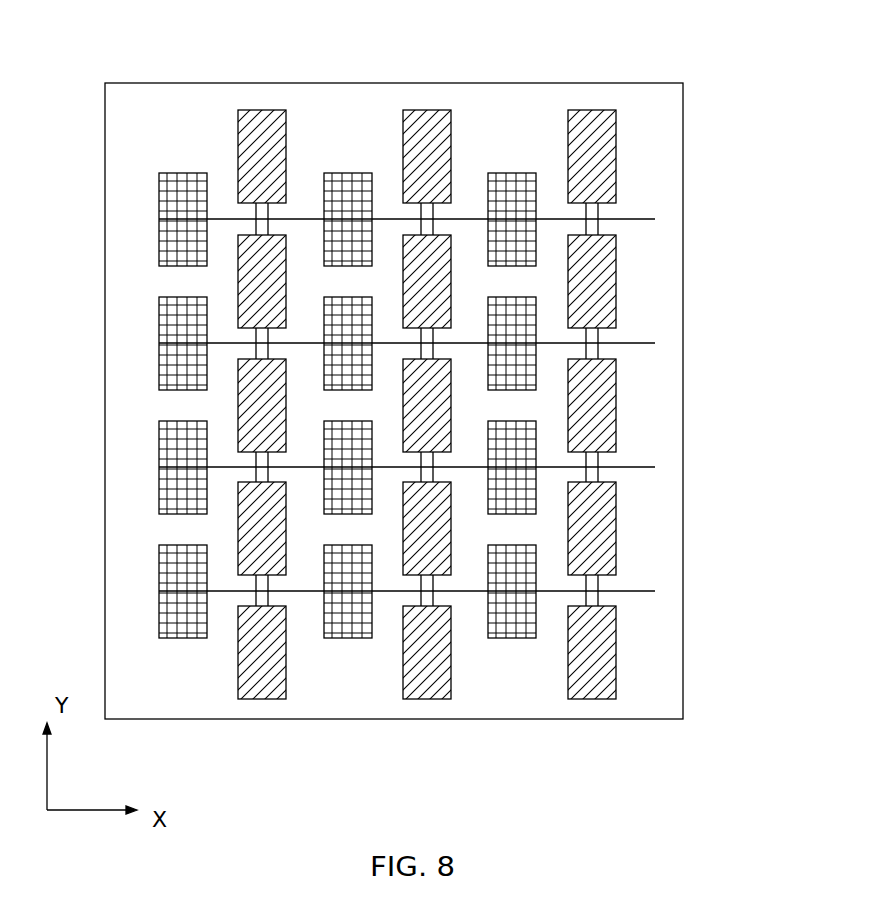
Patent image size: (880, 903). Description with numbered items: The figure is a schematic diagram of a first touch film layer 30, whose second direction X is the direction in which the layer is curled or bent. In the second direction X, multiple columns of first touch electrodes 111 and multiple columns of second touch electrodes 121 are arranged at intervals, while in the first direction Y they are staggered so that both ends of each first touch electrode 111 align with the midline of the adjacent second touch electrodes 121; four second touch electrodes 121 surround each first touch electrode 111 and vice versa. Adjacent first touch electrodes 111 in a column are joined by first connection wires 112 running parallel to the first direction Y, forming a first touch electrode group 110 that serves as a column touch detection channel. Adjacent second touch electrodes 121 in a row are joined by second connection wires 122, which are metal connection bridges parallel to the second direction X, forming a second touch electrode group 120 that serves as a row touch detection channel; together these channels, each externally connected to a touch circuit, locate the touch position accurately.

The touch film layer 30 is at (395, 36).
The first touch electrode group 110 is at (510, 369).
The first touch electrode 111 is at (603, 156).
The first connection wire 112 is at (595, 209).
The second touch electrode group 120 is at (346, 471).
The second touch electrode 121 is at (178, 638).
The second connection wire 122 is at (220, 591).